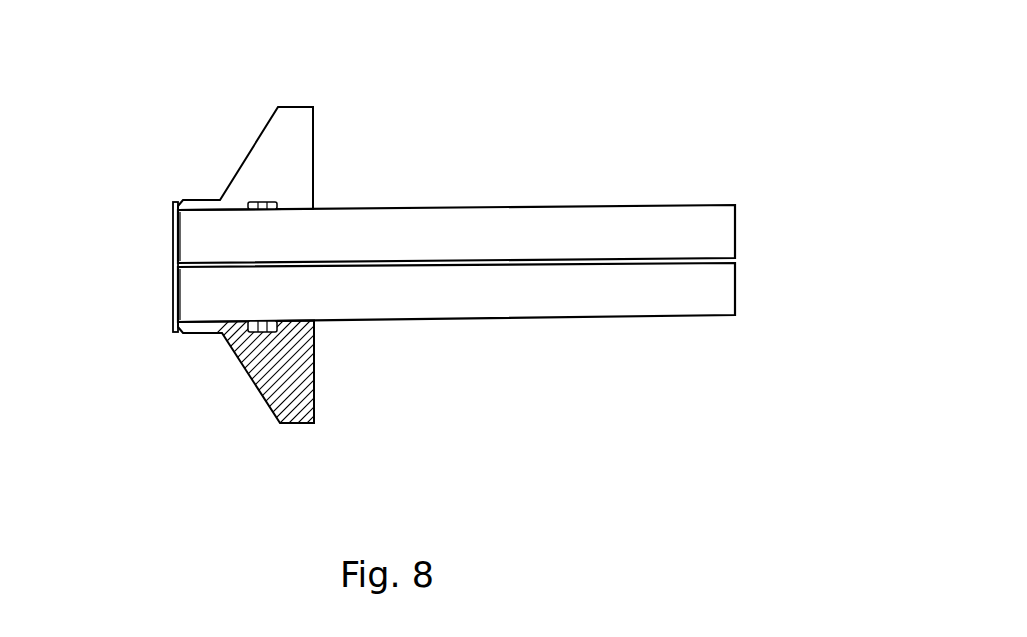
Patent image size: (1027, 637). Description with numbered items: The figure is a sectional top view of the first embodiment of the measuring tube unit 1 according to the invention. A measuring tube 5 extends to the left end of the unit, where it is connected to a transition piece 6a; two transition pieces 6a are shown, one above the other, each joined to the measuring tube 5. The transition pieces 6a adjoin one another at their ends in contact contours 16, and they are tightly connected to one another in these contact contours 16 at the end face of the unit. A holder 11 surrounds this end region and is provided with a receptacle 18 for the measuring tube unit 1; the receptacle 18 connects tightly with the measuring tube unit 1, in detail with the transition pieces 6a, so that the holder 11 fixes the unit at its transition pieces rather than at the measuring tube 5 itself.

The measuring tube unit 1 is at (432, 150).
The measuring tube 5 is at (650, 270).
The transition piece 6a is at (193, 233).
The holder 11 is at (255, 142).
The contact contour 16 is at (183, 268).
The receptacle 18 is at (193, 200).